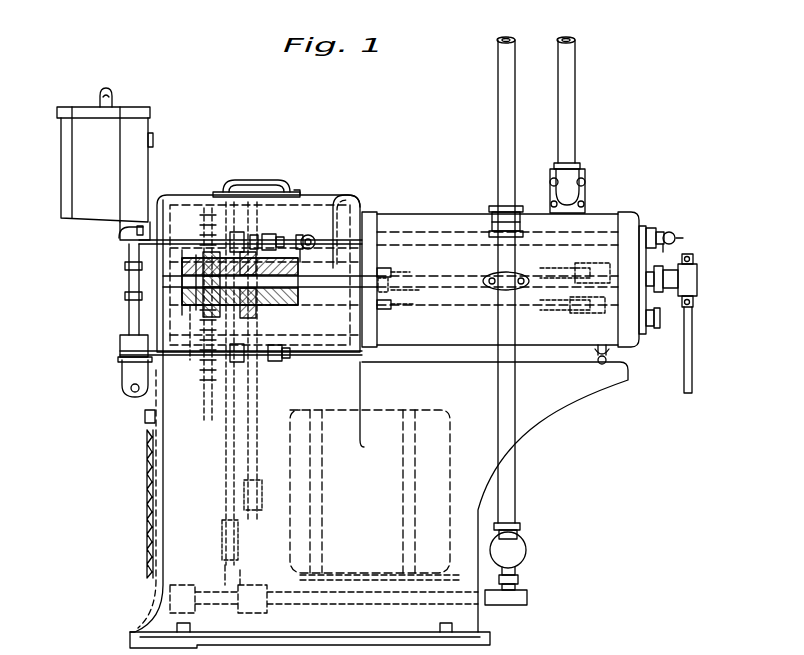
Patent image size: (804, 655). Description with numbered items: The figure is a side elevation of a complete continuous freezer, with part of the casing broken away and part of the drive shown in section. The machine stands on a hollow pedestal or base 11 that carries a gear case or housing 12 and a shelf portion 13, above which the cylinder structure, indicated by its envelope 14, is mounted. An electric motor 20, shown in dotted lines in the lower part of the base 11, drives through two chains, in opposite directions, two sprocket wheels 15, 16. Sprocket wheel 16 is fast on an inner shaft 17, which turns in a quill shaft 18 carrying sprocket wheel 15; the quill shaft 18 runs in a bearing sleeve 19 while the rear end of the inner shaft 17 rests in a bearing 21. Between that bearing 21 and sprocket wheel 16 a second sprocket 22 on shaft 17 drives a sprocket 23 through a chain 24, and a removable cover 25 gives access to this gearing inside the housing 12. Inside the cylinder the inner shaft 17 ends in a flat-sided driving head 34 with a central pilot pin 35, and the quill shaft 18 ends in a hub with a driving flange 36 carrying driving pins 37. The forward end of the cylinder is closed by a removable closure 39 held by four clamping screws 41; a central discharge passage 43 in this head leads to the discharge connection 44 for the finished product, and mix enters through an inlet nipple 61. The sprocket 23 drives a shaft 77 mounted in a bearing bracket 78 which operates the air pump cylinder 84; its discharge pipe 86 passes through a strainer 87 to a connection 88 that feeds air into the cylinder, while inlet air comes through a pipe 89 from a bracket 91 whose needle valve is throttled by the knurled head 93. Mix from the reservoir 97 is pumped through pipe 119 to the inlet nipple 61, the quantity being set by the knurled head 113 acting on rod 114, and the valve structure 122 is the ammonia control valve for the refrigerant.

The pedestal or base 11 is at (540, 415).
The gear case or housing 12 is at (340, 200).
The shelf portion 13 is at (468, 362).
The cylinder structure / envelope 14 is at (425, 214).
The sprocket wheel 15 is at (296, 190).
The sprocket wheel 16 is at (242, 184).
The inner shaft 17 is at (295, 325).
The quill shaft 18 is at (296, 303).
The bearing sleeve 19 is at (245, 316).
The electric motor 20 is at (450, 440).
The bearing 21 is at (182, 298).
The second sprocket 22 is at (204, 258).
The sprocket 23 is at (220, 405).
The chain 24 is at (200, 335).
The removable cover 25 is at (185, 200).
The driving head 34 is at (410, 292).
The pilot pin 35 is at (393, 285).
The driving flange 36 is at (375, 232).
The driving pins 37 is at (382, 258).
The removable closure / head 39 is at (648, 347).
The clamping screws 41 is at (657, 328).
The discharge passage 43 is at (666, 275).
The discharge connection 44 is at (698, 278).
The inlet nipple 61 is at (665, 232).
The shaft 77 is at (258, 380).
The bearing bracket 78 is at (138, 372).
The single acting cylinder (air pump) 84 is at (122, 383).
The pipe 86 is at (129, 273).
The strainer 87 is at (270, 234).
The connection 88 is at (310, 235).
The pipe 89 is at (352, 362).
The bracket 91 is at (578, 287).
The knurled head 93 is at (605, 313).
The reservoir 97 is at (88, 212).
The knurled head / knob 113 is at (607, 262).
The rod 114 is at (462, 281).
The pipe 119 is at (455, 232).
The valve structure (ammonia control valve) 122 is at (588, 190).